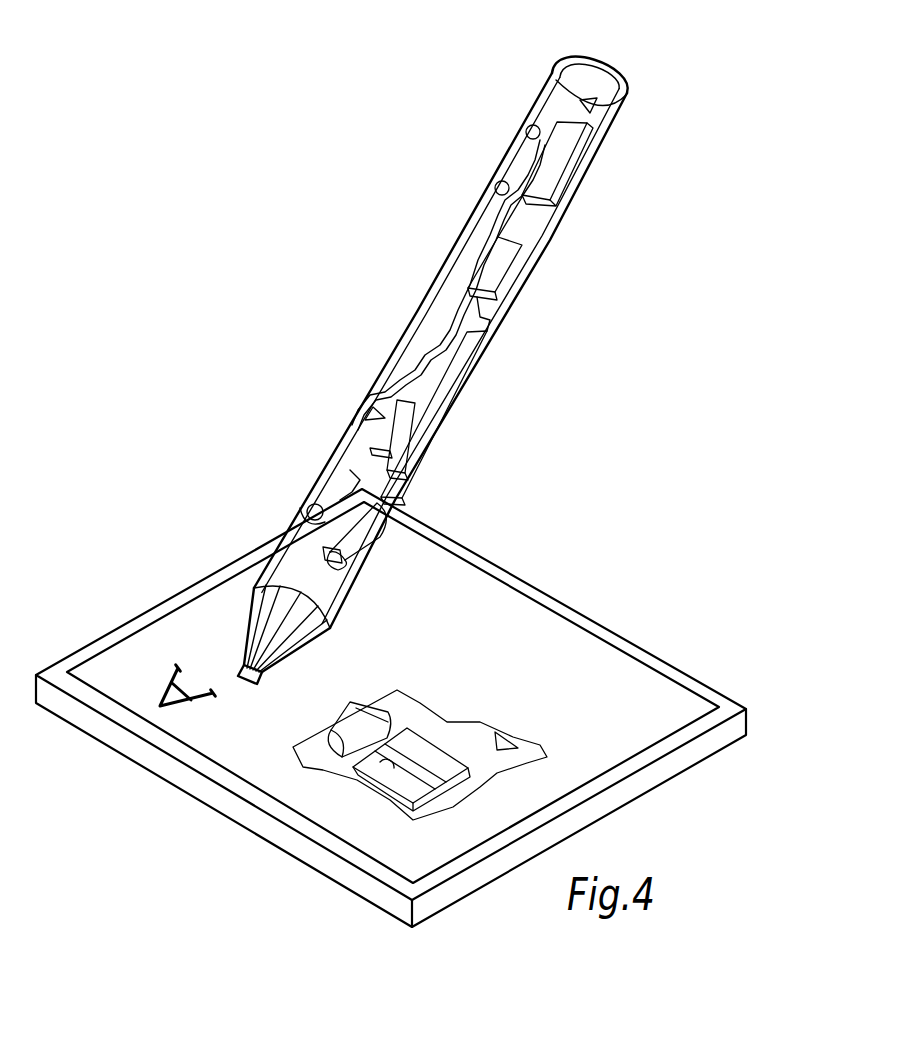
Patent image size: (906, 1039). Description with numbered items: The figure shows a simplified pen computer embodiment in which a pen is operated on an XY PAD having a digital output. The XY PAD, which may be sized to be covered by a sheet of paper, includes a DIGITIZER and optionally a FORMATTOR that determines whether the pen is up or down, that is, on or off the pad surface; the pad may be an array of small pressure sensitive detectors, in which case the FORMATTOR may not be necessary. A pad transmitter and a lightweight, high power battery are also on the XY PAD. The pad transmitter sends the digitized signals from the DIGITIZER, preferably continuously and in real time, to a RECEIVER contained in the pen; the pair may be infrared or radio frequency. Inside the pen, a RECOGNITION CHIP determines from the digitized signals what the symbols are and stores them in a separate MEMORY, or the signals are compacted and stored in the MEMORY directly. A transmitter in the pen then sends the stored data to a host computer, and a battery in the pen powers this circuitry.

The memory MEMORY is at (490, 270).
The receiver RECEIVER is at (368, 396).
The recognition chip RECOGNITION CHIP is at (468, 352).
The digitizer DIGITIZER is at (407, 740).
The XY pad XY PAD is at (622, 666).
The formatter FORMATTOR is at (370, 775).